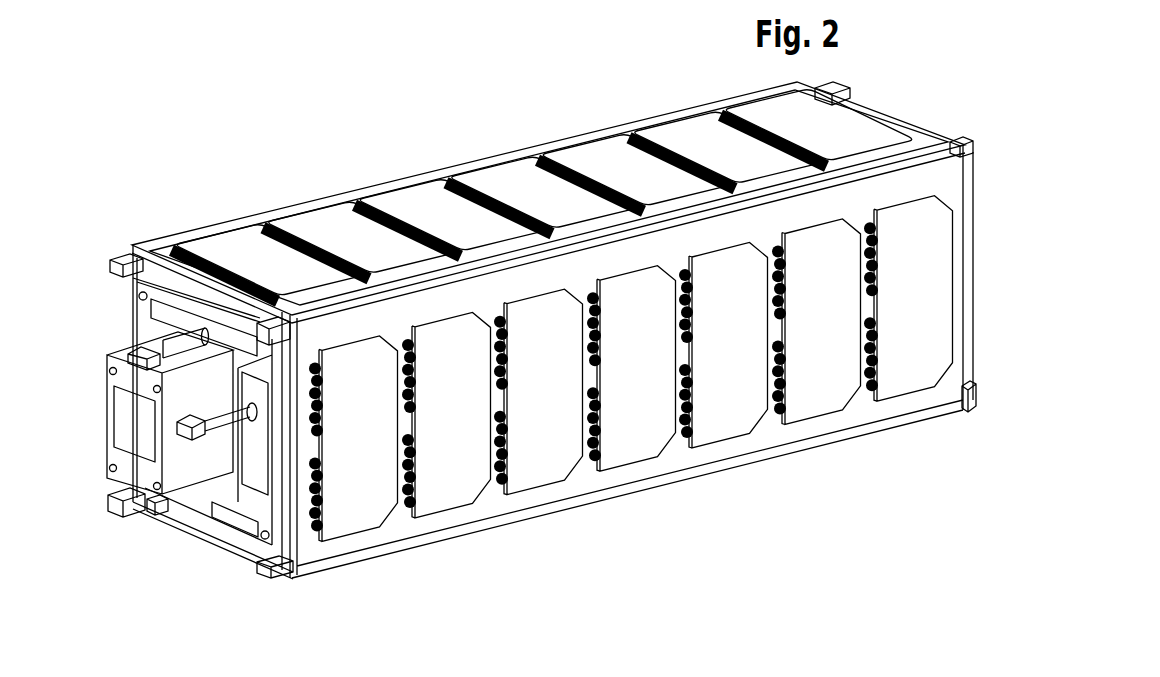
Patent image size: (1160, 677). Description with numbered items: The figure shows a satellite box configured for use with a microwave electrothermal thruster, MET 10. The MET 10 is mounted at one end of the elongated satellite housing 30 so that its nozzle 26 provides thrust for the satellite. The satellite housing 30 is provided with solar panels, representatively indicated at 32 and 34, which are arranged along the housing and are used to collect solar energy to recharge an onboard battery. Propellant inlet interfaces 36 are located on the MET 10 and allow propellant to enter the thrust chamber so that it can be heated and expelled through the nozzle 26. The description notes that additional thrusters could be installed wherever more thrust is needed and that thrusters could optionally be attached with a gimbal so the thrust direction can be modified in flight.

The MET 10 is at (163, 417).
The nozzle 26 is at (137, 432).
The satellite housing 30 is at (517, 157).
The solar panel 32 is at (313, 217).
The solar panel 34 is at (450, 493).
The propellant inlet interface 36 is at (132, 355).